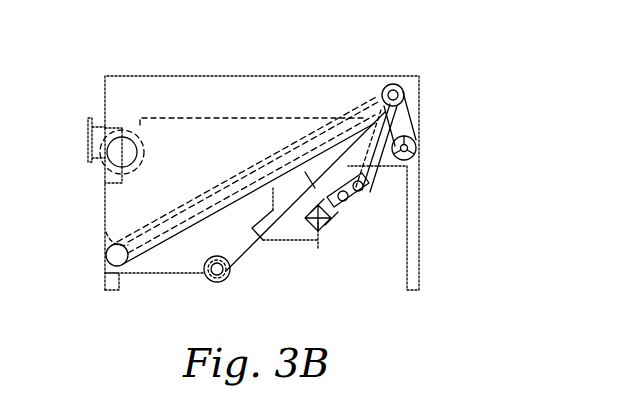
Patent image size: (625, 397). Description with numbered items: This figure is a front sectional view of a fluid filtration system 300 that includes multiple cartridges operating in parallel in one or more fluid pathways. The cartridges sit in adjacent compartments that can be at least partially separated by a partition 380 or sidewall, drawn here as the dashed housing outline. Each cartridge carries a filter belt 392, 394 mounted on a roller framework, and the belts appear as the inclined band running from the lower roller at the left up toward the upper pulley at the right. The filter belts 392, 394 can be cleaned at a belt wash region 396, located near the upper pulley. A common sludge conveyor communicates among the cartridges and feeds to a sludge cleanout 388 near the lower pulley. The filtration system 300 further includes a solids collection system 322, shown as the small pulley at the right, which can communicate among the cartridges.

The fluid filtration system 300 is at (468, 86).
The solids collection system 322 is at (417, 150).
The partition 380 is at (241, 117).
The sludge cleanout 388 is at (230, 272).
The filter belt 392 is at (152, 230).
The filter belt 394 is at (128, 238).
The belt wash region 396 is at (395, 84).